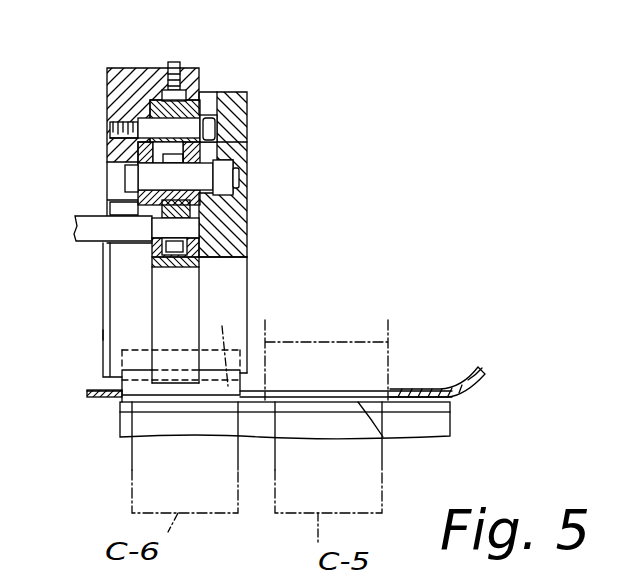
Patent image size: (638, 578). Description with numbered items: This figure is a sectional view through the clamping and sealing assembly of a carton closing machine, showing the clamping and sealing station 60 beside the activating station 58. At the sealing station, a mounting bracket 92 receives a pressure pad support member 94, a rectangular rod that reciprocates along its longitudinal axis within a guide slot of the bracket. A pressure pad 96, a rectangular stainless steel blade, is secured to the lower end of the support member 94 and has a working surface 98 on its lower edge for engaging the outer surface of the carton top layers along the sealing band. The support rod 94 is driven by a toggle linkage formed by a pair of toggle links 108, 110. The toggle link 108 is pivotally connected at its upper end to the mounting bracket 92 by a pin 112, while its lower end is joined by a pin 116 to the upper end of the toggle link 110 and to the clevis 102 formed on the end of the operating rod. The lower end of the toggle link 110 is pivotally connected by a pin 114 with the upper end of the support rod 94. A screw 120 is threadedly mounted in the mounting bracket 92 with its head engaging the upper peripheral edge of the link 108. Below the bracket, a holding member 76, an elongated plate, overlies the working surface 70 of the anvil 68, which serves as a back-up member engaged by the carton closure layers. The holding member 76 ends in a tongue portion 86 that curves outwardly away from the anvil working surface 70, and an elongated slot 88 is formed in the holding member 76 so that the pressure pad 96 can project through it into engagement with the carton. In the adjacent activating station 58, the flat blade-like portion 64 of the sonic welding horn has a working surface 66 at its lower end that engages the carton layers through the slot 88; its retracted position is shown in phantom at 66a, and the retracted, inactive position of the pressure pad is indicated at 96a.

The activating station 58 is at (337, 312).
The clamping and sealing station 60 is at (128, 333).
The blade-like portion of concentrating horn 64 is at (388, 335).
The working surface of horn blade 66 is at (385, 440).
The retracted position of working surface 66a is at (355, 345).
The anvil 68 is at (450, 430).
The working surface of anvil 70 is at (450, 405).
The holding member 76 is at (87, 393).
The tongue portion 86 is at (485, 372).
The elongated slot 88 is at (402, 391).
The mounting bracket 92 is at (107, 72).
The pressure pad support member 94 is at (190, 284).
The pressure pad 96 is at (125, 372).
The retracted position of pressure pad 96a is at (222, 344).
The working surface of pressure pad 98 is at (148, 403).
The clevis 102 is at (175, 130).
The toggle link 108 is at (152, 112).
The toggle link 110 is at (165, 245).
The pin 112 is at (205, 103).
The pin 114 is at (199, 228).
The pin 116 is at (150, 180).
The screw 120 is at (174, 63).